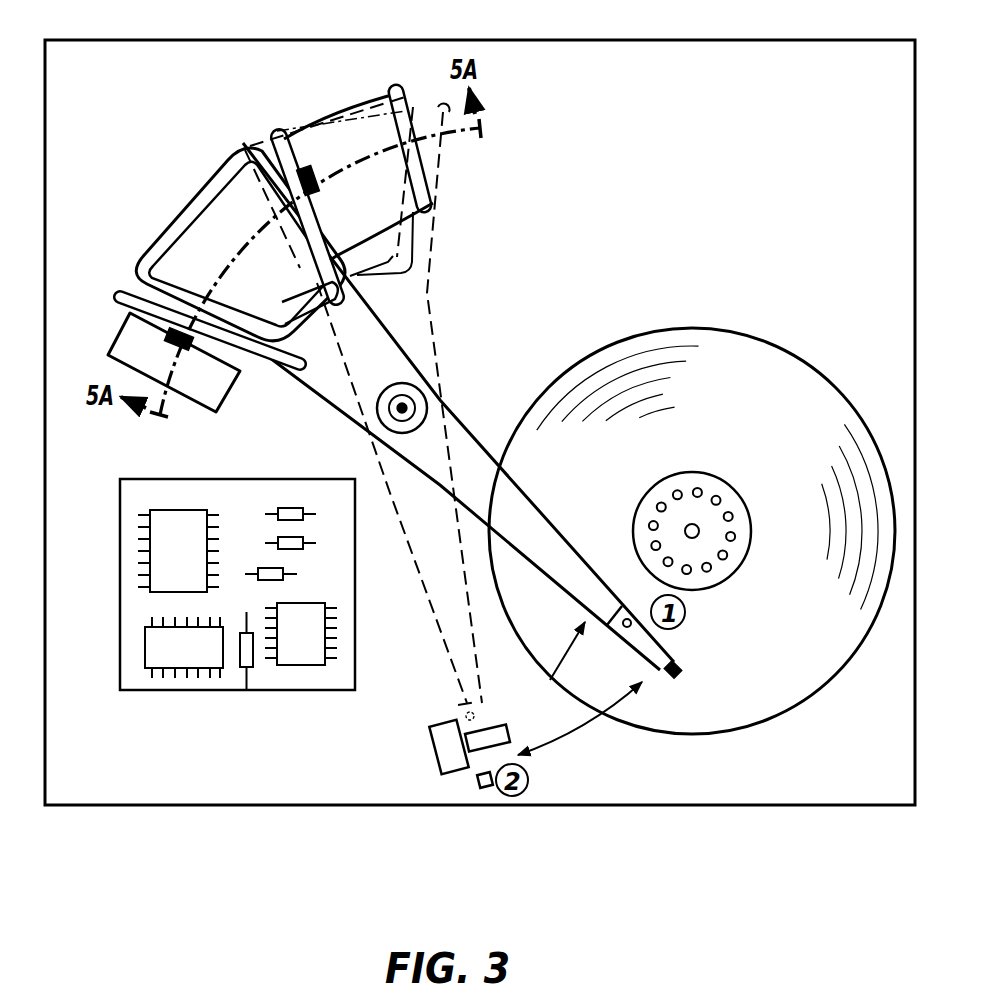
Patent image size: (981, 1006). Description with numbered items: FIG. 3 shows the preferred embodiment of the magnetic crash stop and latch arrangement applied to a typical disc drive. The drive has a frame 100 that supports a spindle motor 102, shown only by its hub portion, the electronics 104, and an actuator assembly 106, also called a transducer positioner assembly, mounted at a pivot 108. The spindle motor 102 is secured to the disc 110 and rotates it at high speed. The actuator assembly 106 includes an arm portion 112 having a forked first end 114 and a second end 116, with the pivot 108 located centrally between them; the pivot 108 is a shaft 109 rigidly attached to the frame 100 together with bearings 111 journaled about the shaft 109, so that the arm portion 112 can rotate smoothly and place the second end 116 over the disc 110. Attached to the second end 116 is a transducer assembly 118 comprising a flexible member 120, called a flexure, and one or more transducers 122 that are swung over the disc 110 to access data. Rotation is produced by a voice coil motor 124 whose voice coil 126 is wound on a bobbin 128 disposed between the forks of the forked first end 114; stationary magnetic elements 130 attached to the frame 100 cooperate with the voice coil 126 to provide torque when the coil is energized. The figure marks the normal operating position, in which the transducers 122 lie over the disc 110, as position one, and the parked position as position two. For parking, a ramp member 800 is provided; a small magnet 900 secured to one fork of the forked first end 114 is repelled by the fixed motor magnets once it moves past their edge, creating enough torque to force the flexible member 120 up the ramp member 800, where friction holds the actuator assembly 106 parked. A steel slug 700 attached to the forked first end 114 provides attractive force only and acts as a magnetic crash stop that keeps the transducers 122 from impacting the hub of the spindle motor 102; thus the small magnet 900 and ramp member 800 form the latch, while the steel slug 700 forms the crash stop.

The frame 100 is at (885, 783).
The spindle motor 102 is at (715, 481).
The electronics 104 is at (266, 692).
The actuator assembly 106 is at (163, 445).
The pivot 108 is at (375, 435).
The shaft 109 is at (404, 406).
The disc 110 is at (851, 638).
The bearings 111 is at (417, 397).
The arm portion 112 is at (458, 448).
The forked first end 114 is at (336, 378).
The second end 116 is at (552, 543).
The transducer assembly 118 is at (550, 680).
The flexible member 120 is at (657, 645).
The transducers 122 is at (681, 671).
The voice coil motor 124 is at (160, 198).
The voice coil 126 is at (205, 183).
The bobbin 128 is at (215, 268).
The stationary magnetic elements 130 is at (182, 402).
The steel slug 700 is at (188, 343).
The ramp member 800 is at (457, 778).
The small magnet 900 is at (304, 170).